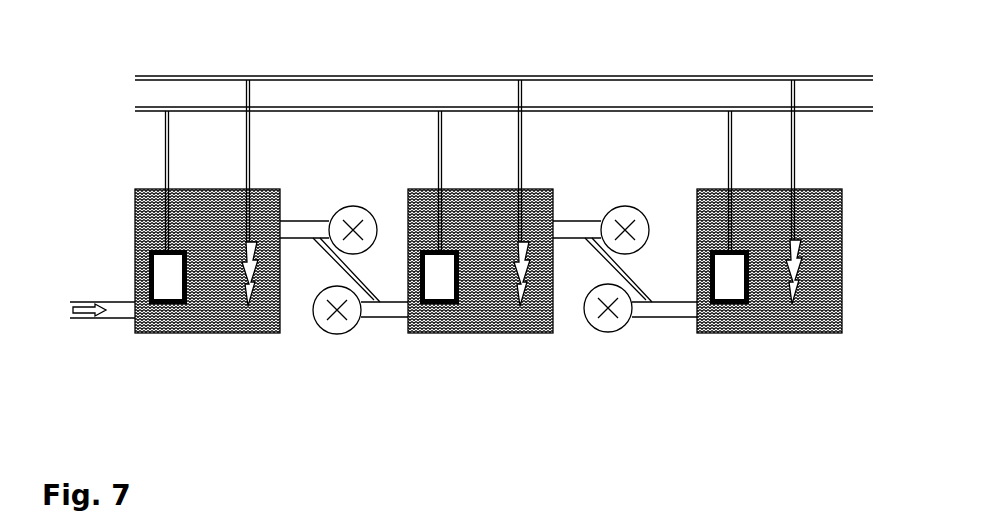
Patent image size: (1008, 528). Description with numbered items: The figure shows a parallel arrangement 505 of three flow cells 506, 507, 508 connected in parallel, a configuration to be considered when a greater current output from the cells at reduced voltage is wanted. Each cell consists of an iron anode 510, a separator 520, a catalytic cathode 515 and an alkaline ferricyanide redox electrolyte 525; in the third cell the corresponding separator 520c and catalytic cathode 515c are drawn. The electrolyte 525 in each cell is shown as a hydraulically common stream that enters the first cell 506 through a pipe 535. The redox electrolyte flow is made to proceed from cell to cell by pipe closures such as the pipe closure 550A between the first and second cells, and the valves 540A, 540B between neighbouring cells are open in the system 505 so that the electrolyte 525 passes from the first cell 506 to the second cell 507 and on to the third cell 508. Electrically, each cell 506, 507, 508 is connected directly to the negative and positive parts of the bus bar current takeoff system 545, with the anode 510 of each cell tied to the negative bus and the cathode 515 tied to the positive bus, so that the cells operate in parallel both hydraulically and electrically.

The parallel arrangement 505 is at (98, 100).
The bus bar current takeoff system 545 is at (622, 82).
The first cell 506 is at (150, 334).
The second cell 507 is at (418, 334).
The third cell 508 is at (713, 334).
The iron anode 510 is at (172, 287).
The separator 520 is at (160, 248).
The separator 520c is at (712, 248).
The catalytic cathode 515 is at (252, 295).
The catalytic cathode 515c is at (795, 270).
The alkaline ferricyanide redox electrolyte 525 is at (258, 330).
The pipe 535 is at (94, 299).
The valve 540A is at (318, 286).
The valve 540B is at (596, 286).
The pipe closure 550A is at (295, 221).